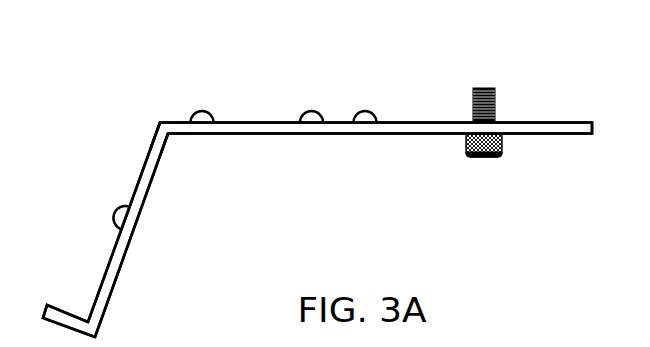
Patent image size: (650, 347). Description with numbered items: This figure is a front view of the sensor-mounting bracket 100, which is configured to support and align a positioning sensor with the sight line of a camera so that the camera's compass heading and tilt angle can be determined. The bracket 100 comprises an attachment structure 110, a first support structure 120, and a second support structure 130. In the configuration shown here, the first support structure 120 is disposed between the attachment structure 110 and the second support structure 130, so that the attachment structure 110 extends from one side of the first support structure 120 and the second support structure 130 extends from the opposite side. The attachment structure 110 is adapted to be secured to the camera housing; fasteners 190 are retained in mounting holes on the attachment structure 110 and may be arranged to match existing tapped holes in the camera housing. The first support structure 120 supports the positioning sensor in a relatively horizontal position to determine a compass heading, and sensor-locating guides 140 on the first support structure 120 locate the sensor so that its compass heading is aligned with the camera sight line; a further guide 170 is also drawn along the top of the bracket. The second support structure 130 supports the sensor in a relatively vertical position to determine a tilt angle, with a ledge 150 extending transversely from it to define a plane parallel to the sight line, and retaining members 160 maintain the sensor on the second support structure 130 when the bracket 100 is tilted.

The sensor-mounting bracket 100 is at (110, 88).
The attachment structure 110 is at (573, 121).
The first support structure 120 is at (178, 121).
The second support structure 130 is at (147, 160).
The sensor-locating guides 140 is at (302, 112).
The ledge 150 is at (72, 315).
The retaining members 160 is at (114, 215).
The protrusion on base plate 170 is at (368, 110).
The fasteners 190 is at (496, 100).